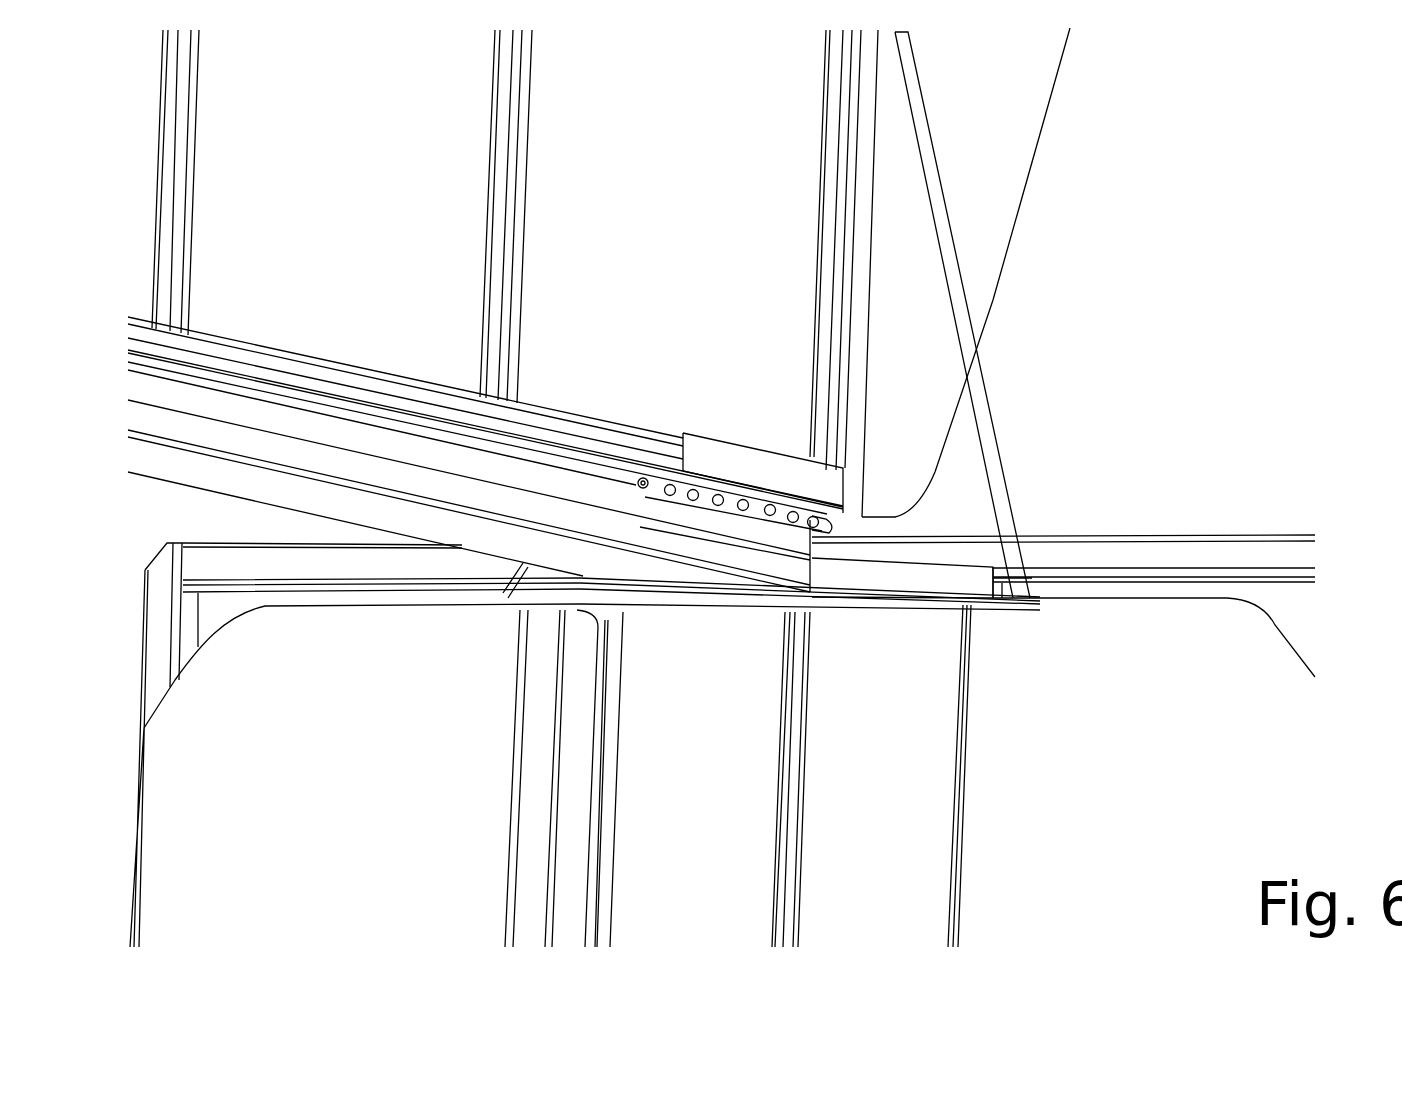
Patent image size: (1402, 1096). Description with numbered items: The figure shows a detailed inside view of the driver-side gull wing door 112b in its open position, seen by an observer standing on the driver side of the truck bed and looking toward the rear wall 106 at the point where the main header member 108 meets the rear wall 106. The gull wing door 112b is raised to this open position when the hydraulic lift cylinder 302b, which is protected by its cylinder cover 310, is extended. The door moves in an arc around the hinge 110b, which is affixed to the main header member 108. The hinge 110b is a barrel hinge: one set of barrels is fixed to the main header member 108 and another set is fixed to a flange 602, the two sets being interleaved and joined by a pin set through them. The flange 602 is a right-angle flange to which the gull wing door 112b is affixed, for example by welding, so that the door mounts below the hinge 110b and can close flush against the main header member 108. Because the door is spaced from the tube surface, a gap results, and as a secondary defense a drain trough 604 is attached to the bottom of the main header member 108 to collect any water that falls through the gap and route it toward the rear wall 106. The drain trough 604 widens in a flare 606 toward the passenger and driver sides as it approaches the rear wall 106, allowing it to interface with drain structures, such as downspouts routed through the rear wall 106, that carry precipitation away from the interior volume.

The rear wall 106 is at (1085, 559).
The main header member 108 is at (588, 493).
The hinge 110b is at (790, 515).
The gull wing door 112b is at (1002, 193).
The hydraulic lift cylinder 302b is at (988, 425).
The cylinder cover 310 is at (985, 722).
The flange 602 is at (792, 478).
The drain trough 604 is at (471, 540).
The flare 606 is at (910, 577).